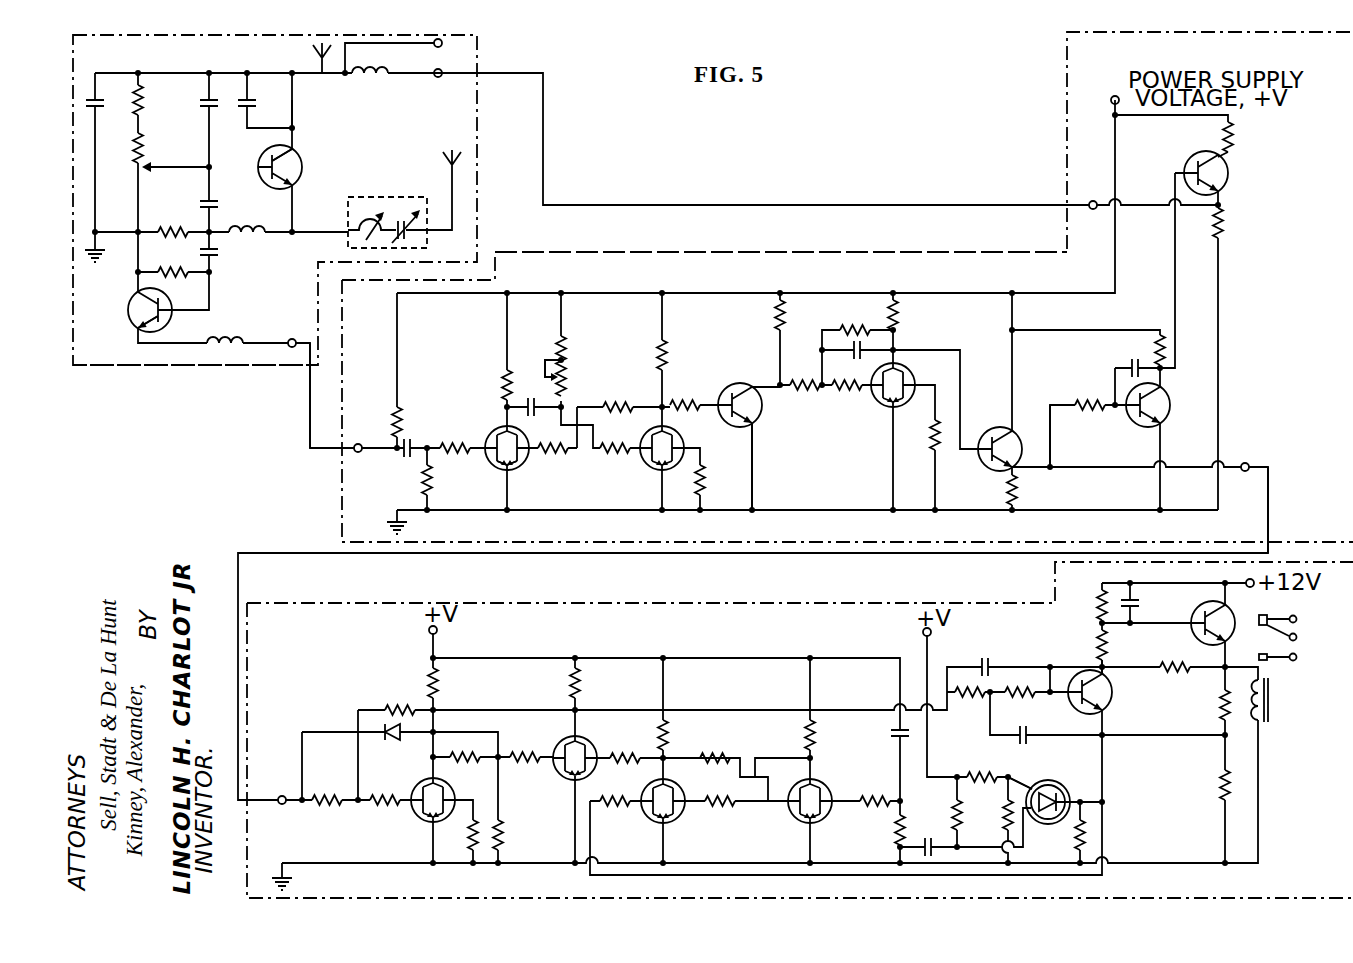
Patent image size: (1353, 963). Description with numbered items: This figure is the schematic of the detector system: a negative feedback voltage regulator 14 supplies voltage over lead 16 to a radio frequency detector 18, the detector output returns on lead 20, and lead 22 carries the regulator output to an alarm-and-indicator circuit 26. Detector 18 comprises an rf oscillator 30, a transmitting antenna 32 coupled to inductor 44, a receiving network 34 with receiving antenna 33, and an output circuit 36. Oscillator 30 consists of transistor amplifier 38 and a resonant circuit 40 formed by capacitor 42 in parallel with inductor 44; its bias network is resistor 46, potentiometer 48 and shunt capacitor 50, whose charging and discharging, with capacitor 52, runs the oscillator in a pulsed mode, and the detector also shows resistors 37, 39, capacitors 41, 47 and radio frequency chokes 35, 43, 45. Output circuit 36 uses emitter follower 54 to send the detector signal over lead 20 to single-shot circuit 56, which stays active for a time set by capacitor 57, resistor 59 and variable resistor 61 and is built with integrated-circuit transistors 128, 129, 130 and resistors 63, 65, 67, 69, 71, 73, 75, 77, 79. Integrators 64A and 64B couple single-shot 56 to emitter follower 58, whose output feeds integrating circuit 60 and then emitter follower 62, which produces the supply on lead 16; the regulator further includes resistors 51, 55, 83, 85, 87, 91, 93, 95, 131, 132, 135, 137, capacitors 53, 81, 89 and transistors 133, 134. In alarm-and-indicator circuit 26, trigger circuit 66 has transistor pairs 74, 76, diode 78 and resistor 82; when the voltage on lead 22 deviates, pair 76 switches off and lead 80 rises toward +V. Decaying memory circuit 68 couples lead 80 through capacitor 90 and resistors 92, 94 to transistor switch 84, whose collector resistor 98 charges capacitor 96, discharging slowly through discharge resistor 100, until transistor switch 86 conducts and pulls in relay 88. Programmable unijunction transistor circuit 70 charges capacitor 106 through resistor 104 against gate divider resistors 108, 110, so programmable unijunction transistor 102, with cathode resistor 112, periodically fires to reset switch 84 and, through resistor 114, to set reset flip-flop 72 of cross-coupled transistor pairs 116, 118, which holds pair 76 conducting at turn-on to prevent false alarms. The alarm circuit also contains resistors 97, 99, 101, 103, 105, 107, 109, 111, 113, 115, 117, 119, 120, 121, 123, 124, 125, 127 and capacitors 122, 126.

The negative feedback voltage regulator 14 is at (770, 252).
The lead 16 is at (740, 204).
The radio frequency detector 18 is at (236, 366).
The lead 20 is at (309, 400).
The lead 22 is at (1268, 520).
The alarm-and-indicator circuit 26 is at (856, 603).
The rf oscillator 30 is at (306, 172).
The transmitting antenna 32 is at (322, 75).
The receiving antenna 33 is at (453, 202).
The receiving network 34 is at (408, 190).
The radio frequency choke 35 is at (238, 341).
The output circuit 36 is at (128, 334).
The resistor 37 is at (174, 266).
The transistor amplifier 38 is at (298, 152).
The resistor 39 is at (176, 228).
The resonant circuit 40 is at (263, 68).
The capacitor 41 is at (214, 262).
The capacitor 42 is at (261, 90).
The radio frequency choke 43 is at (256, 236).
The inductor 44 is at (298, 98).
The radio frequency choke 45 is at (384, 78).
The resistor 46 is at (157, 98).
The capacitor 47 is at (98, 110).
The potentiometer 48 is at (157, 141).
The shunt capacitor 50 is at (216, 204).
The resistor 51 is at (401, 412).
The capacitor 52 is at (212, 108).
The capacitor 53 is at (411, 442).
The emitter follower 54 is at (132, 298).
The resistor 55 is at (432, 486).
The single-shot circuit 56 is at (492, 428).
The capacitor 57 is at (536, 395).
The emitter follower 58 is at (992, 428).
The resistor 59 is at (564, 350).
The integrating circuit 60 is at (1100, 392).
The variable resistor 61 is at (566, 376).
The emitter follower 62 is at (1200, 150).
The resistor 63 is at (458, 456).
The integrator 64A is at (772, 425).
The integrator 64B is at (918, 352).
The resistor 65 is at (558, 456).
The trigger circuit 66 is at (546, 768).
The resistor 67 is at (616, 456).
The decaying memory circuit 68 is at (1086, 658).
The resistor 69 is at (705, 480).
The programmable unijunction transistor circuit 70 is at (1040, 780).
The resistor 71 is at (846, 396).
The reset flip-flop circuit 72 is at (758, 818).
The resistor 73 is at (931, 450).
The transistor pair 74 is at (458, 778).
The resistor 75 is at (503, 392).
The transistor pair 76 is at (594, 764).
The resistor 77 is at (667, 354).
The diode 78 is at (392, 745).
The resistor 79 is at (899, 310).
The lead 80 is at (712, 710).
The capacitor 81 is at (852, 354).
The resistor 82 is at (466, 764).
The resistor 83 is at (856, 326).
The transistor switch 84 is at (1114, 696).
The resistor 85 is at (1004, 490).
The transistor switch 86 is at (1196, 640).
The resistor 87 is at (1080, 400).
The relay 88 is at (1272, 712).
The capacitor 89 is at (1130, 364).
The capacitor 90 is at (996, 658).
The resistor 91 is at (1163, 338).
The resistor 92 is at (972, 702).
The resistor 93 is at (1223, 230).
The resistor 94 is at (1026, 680).
The resistor 95 is at (1234, 140).
The capacitor 96 is at (1136, 604).
The resistor 97 is at (390, 812).
The collector resistor 98 is at (1108, 644).
The resistor 99 is at (470, 840).
The discharge resistor 100 is at (1174, 680).
The resistor 101 is at (530, 766).
The programmable unijunction transistor 102 is at (1062, 792).
The resistor 103 is at (630, 768).
The resistor 104 is at (950, 820).
The resistor 105 is at (716, 812).
The capacitor 106 is at (942, 836).
The resistor 107 is at (720, 755).
The voltage divider resistor 108 is at (978, 785).
The resistor 109 is at (872, 800).
The voltage divider resistor 110 is at (1004, 820).
The resistor 111 is at (440, 688).
The resistor 112 is at (1072, 852).
The resistor 113 is at (582, 688).
The resistor 114 is at (618, 815).
The resistor 115 is at (669, 736).
The transistor pair 116 is at (680, 796).
The resistor 117 is at (816, 736).
The transistor pair 118 is at (820, 788).
The resistor 119 is at (330, 812).
The resistor 120 is at (402, 702).
The resistor 121 is at (504, 840).
The capacitor 122 is at (1027, 733).
The resistor 123 is at (1098, 600).
The resistor 124 is at (1218, 712).
The resistor 125 is at (1220, 792).
The capacitor 126 is at (896, 745).
The resistor 127 is at (895, 838).
The transistor 128 is at (522, 468).
The transistor 129 is at (688, 436).
The transistor 130 is at (882, 410).
The resistor 131 is at (622, 390).
The resistor 132 is at (805, 396).
The transistor 133 is at (1166, 418).
The transistor 134 is at (742, 382).
The resistor 135 is at (690, 400).
The resistor 137 is at (784, 324).